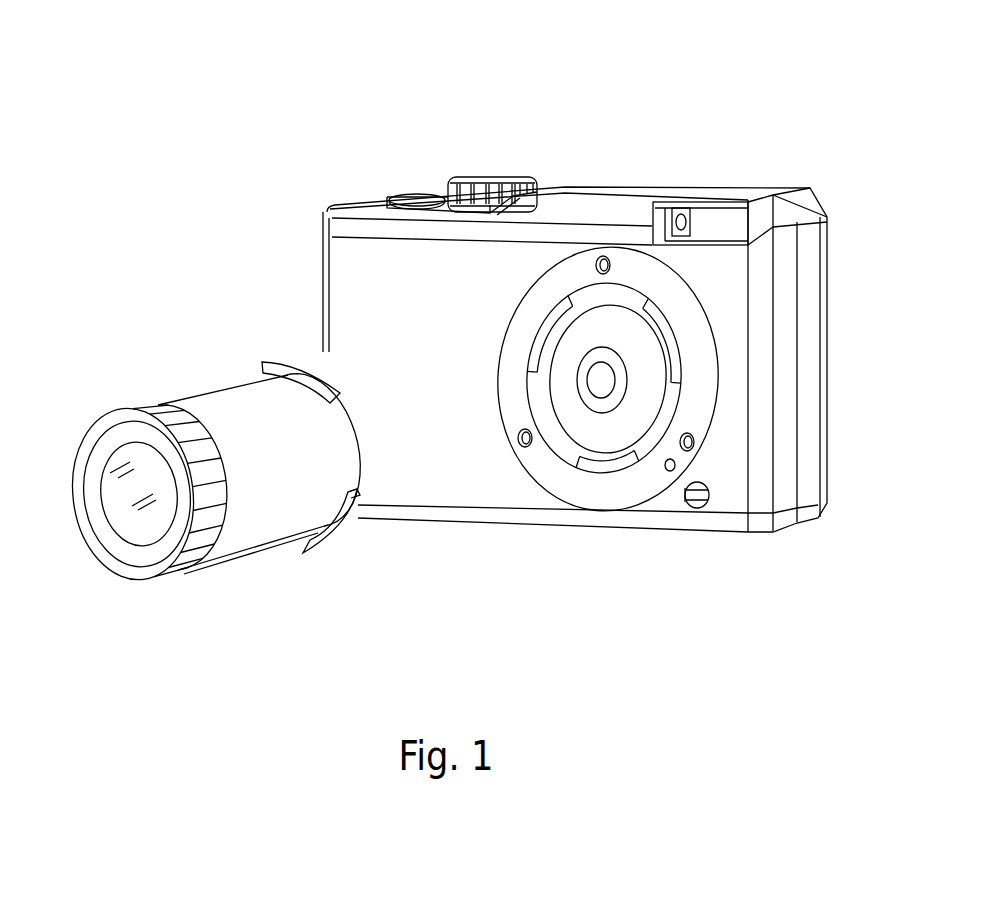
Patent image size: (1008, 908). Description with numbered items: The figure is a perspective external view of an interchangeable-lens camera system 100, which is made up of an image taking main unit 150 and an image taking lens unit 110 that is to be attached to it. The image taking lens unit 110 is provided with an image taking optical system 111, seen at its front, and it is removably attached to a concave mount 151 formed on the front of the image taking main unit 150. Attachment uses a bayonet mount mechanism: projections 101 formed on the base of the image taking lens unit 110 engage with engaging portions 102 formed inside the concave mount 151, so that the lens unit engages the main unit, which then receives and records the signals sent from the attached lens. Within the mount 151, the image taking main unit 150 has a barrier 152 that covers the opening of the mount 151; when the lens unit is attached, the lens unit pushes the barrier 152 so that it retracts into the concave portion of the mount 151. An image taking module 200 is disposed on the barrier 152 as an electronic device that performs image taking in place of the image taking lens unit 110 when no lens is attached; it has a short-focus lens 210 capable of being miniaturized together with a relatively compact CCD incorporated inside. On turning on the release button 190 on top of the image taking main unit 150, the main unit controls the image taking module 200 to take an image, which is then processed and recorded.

The interchangeable-lens camera system 100 is at (297, 158).
The image taking lens unit 110 is at (218, 389).
The image taking optical system 111 is at (130, 457).
The projections 101 is at (300, 358).
The image taking main unit 150 is at (620, 186).
The concave mount 151 is at (698, 322).
The barrier 152 is at (573, 448).
The engaging portions 102 is at (532, 342).
The release button 190 is at (414, 194).
The image taking module 200 is at (583, 410).
The short-focus lens 210 is at (587, 385).